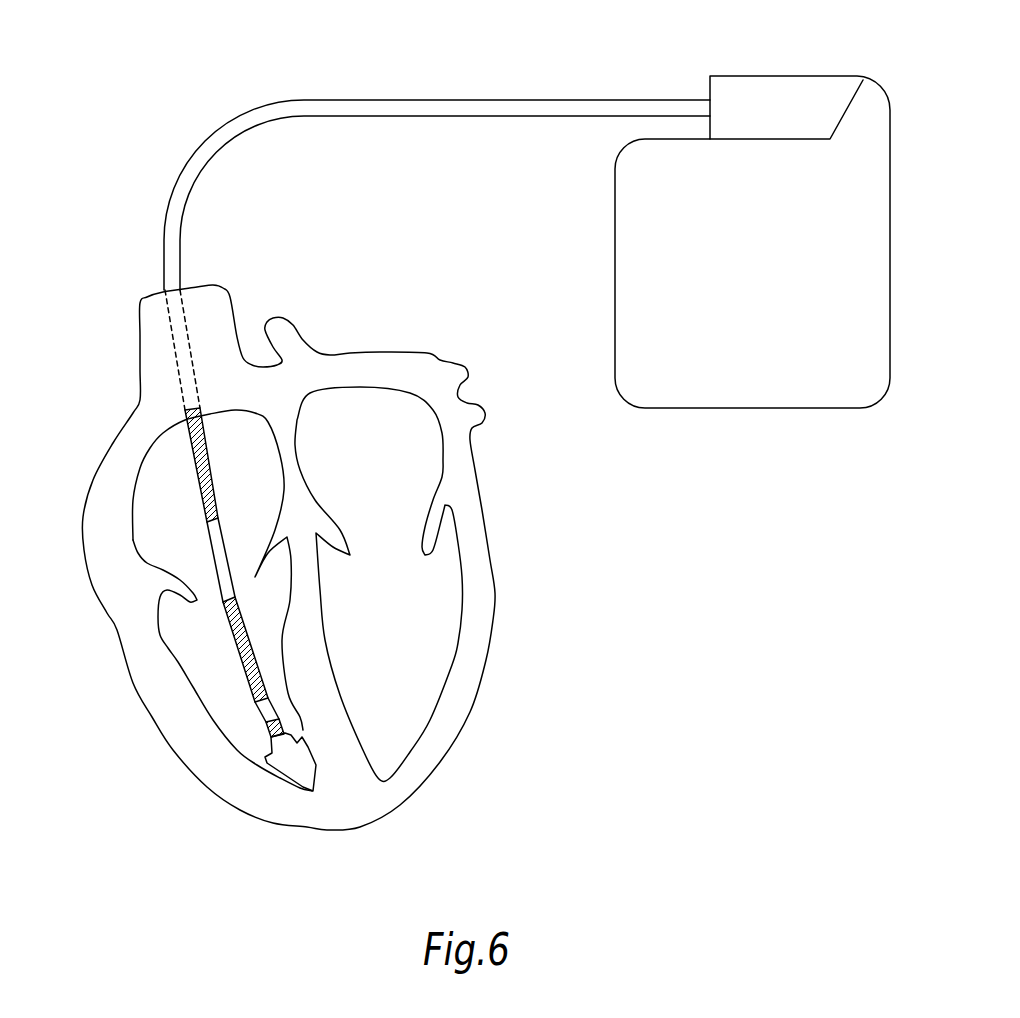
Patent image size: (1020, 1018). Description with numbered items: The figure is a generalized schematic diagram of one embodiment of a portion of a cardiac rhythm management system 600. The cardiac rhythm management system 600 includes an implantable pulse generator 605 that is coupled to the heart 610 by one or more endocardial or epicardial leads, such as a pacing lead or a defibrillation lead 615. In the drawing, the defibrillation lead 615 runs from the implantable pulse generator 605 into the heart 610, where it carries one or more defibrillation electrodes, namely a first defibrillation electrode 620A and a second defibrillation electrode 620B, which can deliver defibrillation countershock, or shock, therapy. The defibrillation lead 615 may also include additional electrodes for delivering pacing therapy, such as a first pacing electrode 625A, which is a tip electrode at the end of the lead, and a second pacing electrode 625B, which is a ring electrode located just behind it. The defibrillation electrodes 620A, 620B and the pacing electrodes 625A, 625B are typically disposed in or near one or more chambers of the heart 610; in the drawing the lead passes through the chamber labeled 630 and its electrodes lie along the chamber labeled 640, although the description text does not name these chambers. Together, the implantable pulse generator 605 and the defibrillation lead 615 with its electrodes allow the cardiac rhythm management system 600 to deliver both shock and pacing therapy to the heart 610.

The cardiac rhythm management system 600 is at (160, 43).
The implantable pulse generator 605 is at (752, 409).
The heart 610 is at (453, 723).
The defibrillation lead 615 is at (510, 100).
The first defibrillation electrode 620A is at (255, 655).
The second defibrillation electrode 620B is at (185, 412).
The first pacing electrode 625A is at (310, 790).
The second pacing electrode 625B is at (277, 730).
The right atrium 630 is at (170, 506).
The right ventricle 640 is at (211, 655).